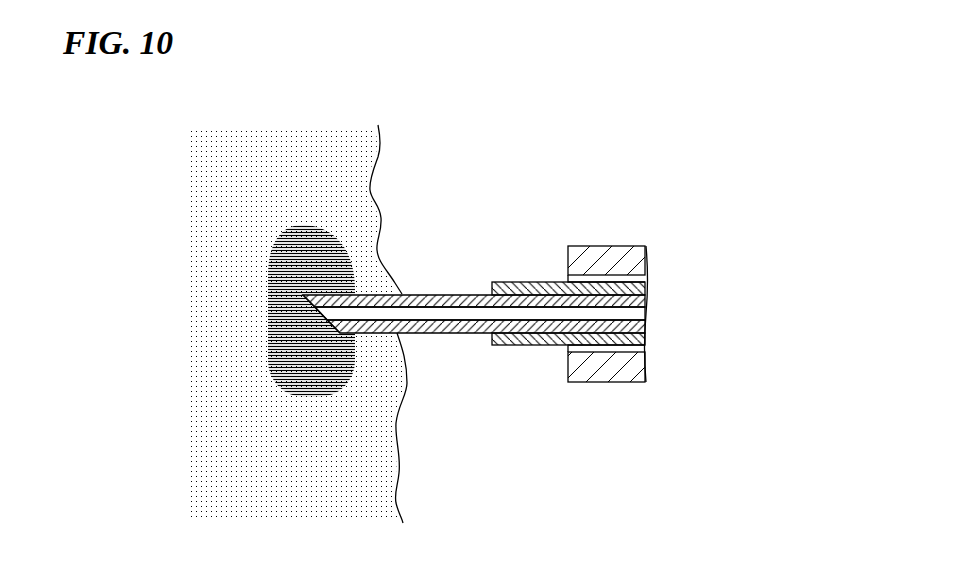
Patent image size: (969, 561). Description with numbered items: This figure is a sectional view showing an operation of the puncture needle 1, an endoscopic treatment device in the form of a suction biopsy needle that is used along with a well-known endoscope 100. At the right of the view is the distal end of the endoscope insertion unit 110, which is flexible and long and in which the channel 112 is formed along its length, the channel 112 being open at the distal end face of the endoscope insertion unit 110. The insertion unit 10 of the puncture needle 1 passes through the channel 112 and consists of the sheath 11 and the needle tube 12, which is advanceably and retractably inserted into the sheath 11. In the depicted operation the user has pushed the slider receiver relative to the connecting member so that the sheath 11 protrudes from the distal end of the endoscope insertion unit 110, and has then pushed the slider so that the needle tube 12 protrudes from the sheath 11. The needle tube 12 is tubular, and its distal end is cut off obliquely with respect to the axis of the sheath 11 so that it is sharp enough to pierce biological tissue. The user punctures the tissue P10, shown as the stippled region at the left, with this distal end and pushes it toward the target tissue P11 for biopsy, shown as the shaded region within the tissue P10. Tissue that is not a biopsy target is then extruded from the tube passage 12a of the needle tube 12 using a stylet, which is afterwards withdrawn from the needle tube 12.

The puncture needle 1 is at (534, 309).
The insertion unit 10 is at (474, 284).
The sheath 11 is at (567, 270).
The needle tube 12 is at (441, 268).
The tube passage 12a is at (456, 320).
The endoscope 100 is at (666, 309).
The endoscope insertion unit 110 is at (617, 238).
The channel 112 is at (606, 346).
The tissue P10 is at (368, 146).
The target tissue P11 is at (322, 380).